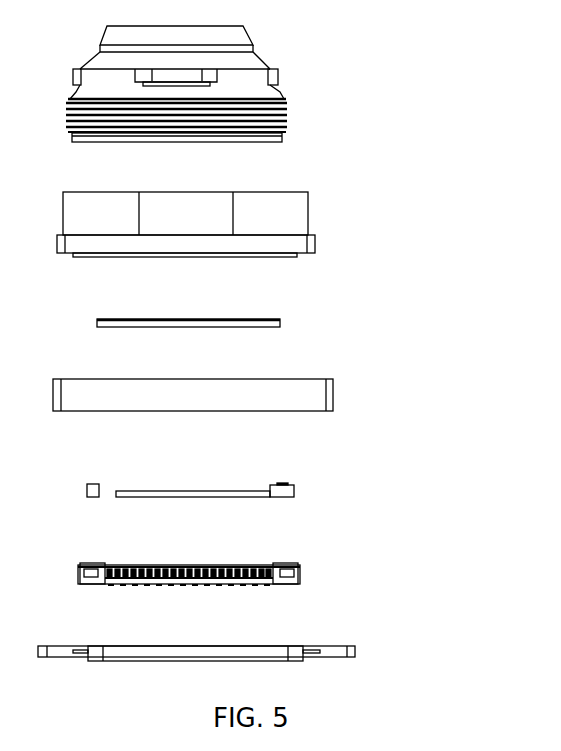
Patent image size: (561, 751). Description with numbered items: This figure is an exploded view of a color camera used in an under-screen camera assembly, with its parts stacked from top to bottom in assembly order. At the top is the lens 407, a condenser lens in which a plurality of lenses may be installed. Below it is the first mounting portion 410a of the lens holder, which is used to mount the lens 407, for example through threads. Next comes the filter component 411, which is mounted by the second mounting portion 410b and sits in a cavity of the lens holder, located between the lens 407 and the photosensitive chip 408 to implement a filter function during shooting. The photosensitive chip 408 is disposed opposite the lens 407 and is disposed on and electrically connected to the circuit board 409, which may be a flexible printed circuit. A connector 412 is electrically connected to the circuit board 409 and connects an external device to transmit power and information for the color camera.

The lens 407 is at (297, 88).
The first mounting portion 410a is at (322, 222).
The filter component 411 is at (298, 323).
The second mounting portion 410b is at (338, 398).
The photosensitive chip 408 is at (307, 493).
The connector 412 is at (307, 578).
The circuit board 409 is at (360, 650).